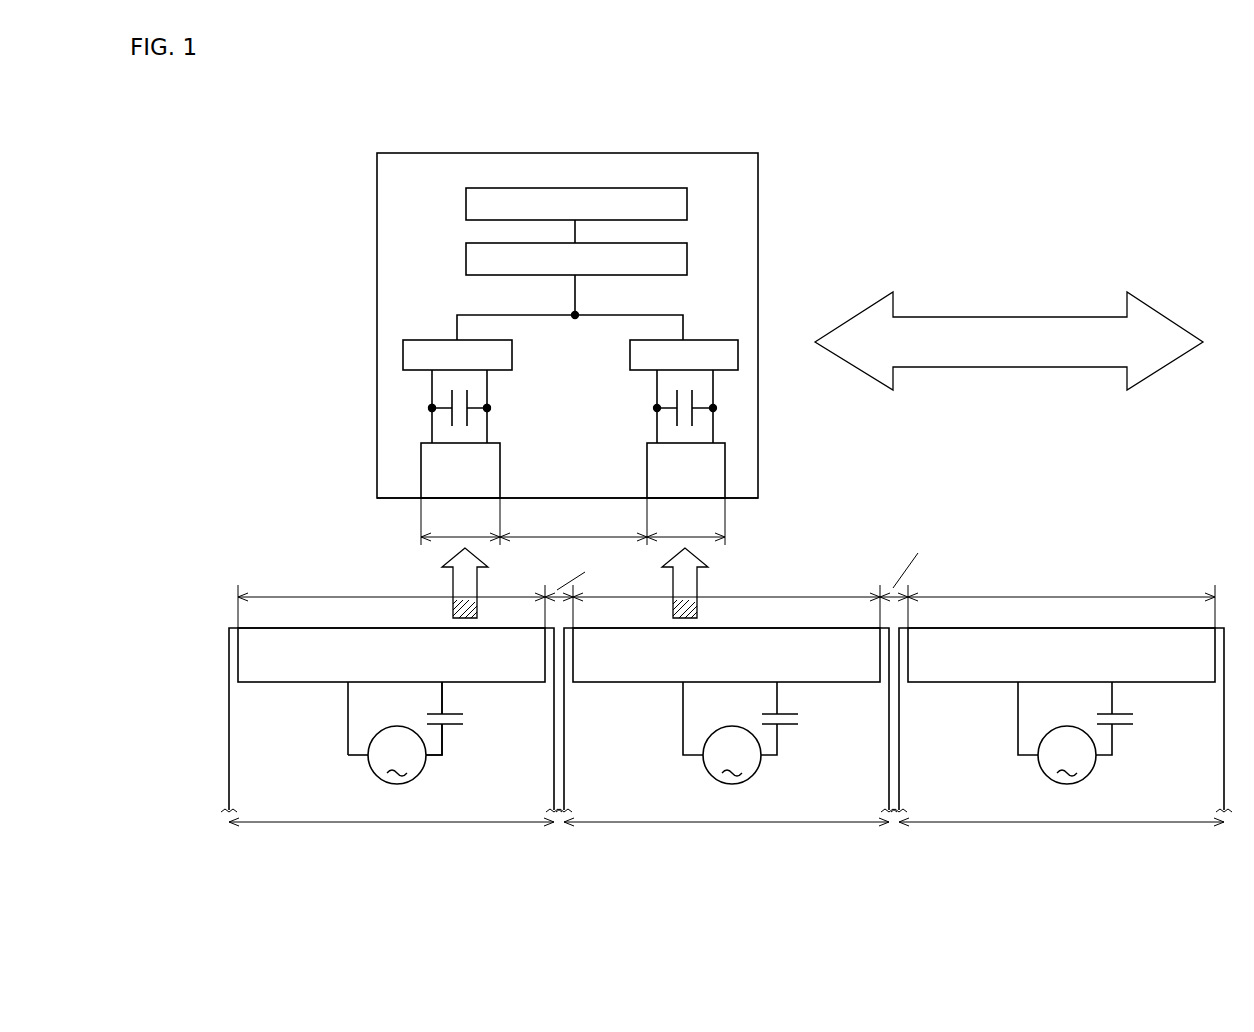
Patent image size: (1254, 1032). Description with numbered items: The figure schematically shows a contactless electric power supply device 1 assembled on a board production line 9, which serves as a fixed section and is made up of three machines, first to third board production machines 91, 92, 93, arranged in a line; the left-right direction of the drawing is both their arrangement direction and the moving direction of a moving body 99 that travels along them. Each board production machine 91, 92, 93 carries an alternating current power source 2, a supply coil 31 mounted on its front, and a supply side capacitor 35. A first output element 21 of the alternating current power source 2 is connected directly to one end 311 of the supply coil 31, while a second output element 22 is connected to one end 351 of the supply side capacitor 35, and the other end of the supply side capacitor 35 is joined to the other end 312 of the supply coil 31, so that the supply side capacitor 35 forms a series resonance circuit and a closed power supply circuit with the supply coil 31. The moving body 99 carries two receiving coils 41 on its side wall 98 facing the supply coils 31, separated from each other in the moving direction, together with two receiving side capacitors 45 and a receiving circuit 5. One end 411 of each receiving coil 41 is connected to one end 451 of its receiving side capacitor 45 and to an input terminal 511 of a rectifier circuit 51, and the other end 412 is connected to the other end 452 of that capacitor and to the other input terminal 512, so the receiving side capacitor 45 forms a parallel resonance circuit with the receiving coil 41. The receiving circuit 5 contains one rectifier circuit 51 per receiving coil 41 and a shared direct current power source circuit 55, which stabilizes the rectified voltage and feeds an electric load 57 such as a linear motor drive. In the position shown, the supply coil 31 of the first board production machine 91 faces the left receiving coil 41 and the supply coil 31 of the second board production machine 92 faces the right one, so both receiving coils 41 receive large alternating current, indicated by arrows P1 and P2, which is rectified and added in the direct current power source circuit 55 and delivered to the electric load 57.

The contactless electric power supply device 1 is at (250, 540).
The receiving circuit 5 is at (437, 292).
The moving body 99 is at (397, 192).
The electric load 57 is at (562, 217).
The direct current power source circuit 55 is at (562, 272).
The rectifier circuit 51 is at (444, 367).
The terminal on the input side of rectifier circuit 511 is at (432, 377).
The other end on the input side of rectifier circuit 512 is at (488, 378).
The receiving side capacitor 45 is at (452, 397).
The end of receiving coil 411 is at (432, 408).
The end of receiving side capacitor 451 is at (432, 408).
The other end of receiving coil 412 is at (487, 410).
The other end of receiving side capacitor 452 is at (487, 408).
The receiving coil 41 is at (446, 479).
The side wall 98 is at (402, 503).
The board production line 9 is at (193, 653).
The first board production machine 91 is at (526, 801).
The second board production machine 92 is at (861, 801).
The third board production machine 93 is at (1196, 801).
The supply coil 31 is at (377, 670).
The end of supply coil 311 is at (350, 688).
The first output element 21 is at (350, 757).
The alternating current power source 2 is at (375, 778).
The second output element 22 is at (430, 760).
The end of supply side capacitor 351 is at (434, 739).
The supply side capacitor 35 is at (462, 722).
The other end of supply coil 312 is at (451, 690).
The arrow indicating received alternating current P1 is at (462, 580).
The arrow indicating received alternating current P2 is at (687, 583).